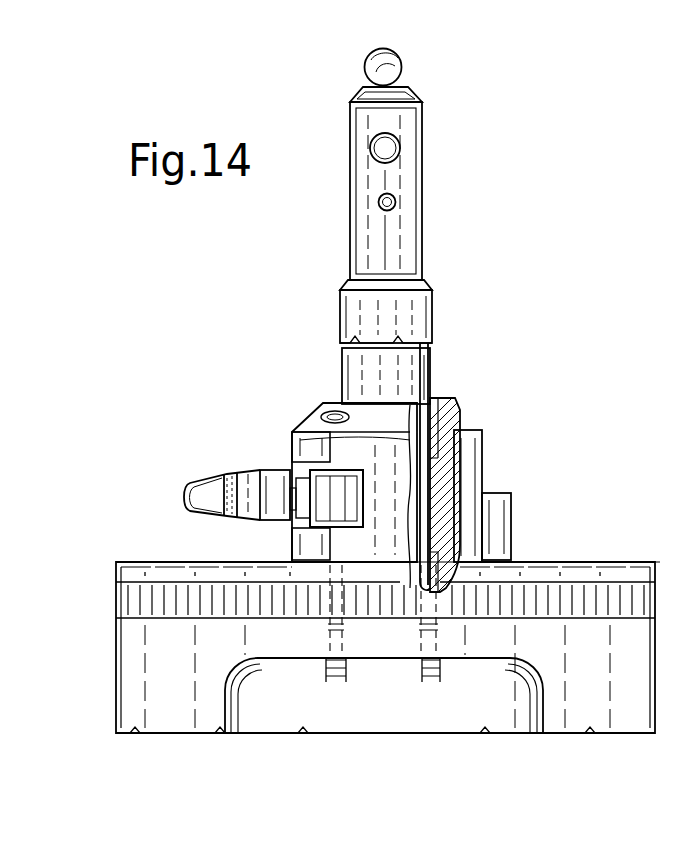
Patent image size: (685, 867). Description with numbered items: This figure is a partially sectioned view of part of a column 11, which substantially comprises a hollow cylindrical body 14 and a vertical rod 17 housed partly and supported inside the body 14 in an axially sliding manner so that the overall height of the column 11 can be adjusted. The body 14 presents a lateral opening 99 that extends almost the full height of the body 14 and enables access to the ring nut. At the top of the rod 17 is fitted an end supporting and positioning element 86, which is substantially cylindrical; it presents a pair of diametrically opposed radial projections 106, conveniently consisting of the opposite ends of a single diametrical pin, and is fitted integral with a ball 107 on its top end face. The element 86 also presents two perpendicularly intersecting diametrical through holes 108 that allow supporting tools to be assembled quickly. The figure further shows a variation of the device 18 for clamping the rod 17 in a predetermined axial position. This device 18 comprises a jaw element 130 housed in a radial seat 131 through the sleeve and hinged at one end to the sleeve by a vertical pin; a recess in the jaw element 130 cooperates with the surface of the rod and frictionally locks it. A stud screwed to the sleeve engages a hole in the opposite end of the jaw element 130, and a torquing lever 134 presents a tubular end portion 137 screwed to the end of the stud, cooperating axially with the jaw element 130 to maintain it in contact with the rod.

The column 11 is at (543, 504).
The hollow cylindrical body 14 is at (118, 669).
The vertical rod 17 is at (395, 318).
The device for clamping rod 18 is at (241, 465).
The end supporting and positioning element 86 is at (400, 183).
The lateral opening 99 is at (531, 688).
The radial projections 106 is at (390, 151).
The ball 107 is at (392, 70).
The diametrical through holes 108 is at (383, 203).
The jaw element 130 is at (253, 520).
The radial seat 131 is at (313, 495).
The torquing lever 134 is at (207, 497).
The tubular end portion 137 is at (278, 483).